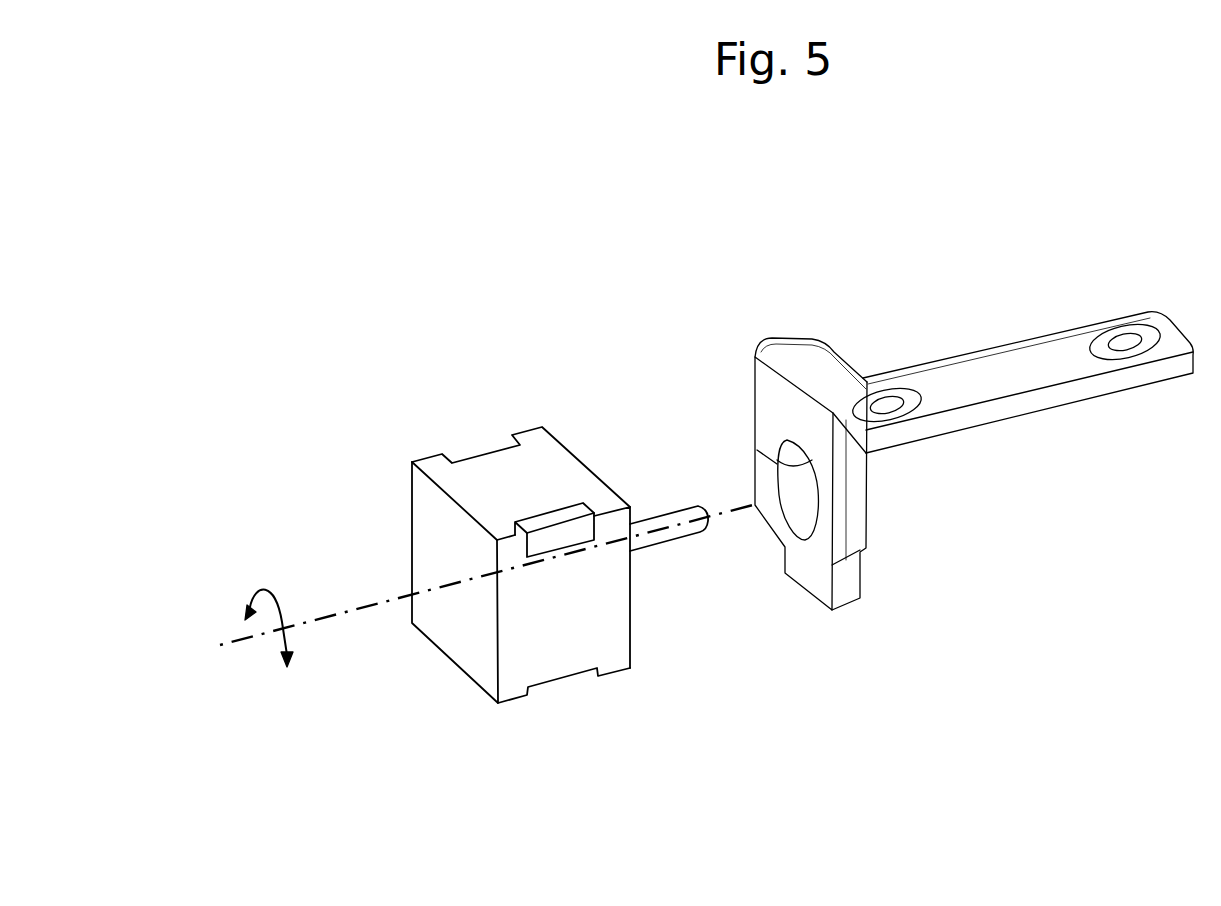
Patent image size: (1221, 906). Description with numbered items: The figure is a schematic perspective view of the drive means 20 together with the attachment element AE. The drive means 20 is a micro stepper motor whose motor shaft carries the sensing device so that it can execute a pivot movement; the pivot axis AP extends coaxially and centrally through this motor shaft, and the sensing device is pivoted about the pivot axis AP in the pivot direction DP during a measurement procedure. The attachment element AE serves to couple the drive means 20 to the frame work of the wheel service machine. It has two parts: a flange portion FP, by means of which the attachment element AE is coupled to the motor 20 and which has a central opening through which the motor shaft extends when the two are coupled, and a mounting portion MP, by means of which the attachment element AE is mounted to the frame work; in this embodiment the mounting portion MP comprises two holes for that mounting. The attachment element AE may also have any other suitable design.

The drive means 20 is at (565, 655).
The flange portion FP is at (765, 395).
The mounting portion MP is at (990, 418).
The attachment element AE is at (927, 400).
The pivot axis AP is at (328, 620).
The pivot direction DP is at (247, 597).